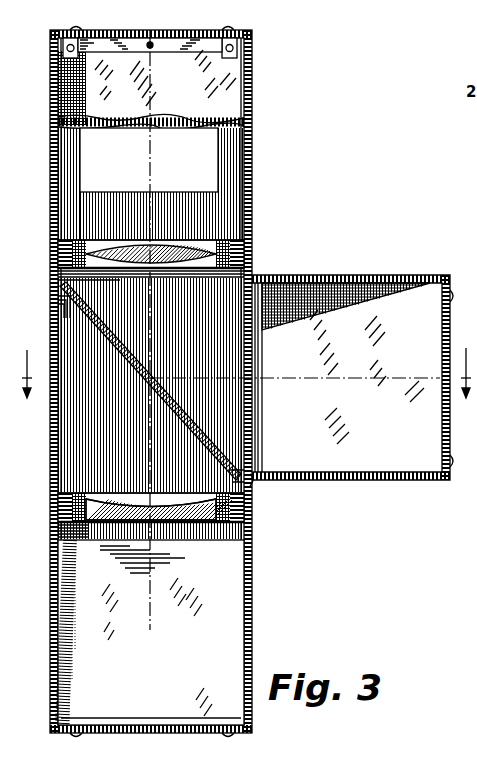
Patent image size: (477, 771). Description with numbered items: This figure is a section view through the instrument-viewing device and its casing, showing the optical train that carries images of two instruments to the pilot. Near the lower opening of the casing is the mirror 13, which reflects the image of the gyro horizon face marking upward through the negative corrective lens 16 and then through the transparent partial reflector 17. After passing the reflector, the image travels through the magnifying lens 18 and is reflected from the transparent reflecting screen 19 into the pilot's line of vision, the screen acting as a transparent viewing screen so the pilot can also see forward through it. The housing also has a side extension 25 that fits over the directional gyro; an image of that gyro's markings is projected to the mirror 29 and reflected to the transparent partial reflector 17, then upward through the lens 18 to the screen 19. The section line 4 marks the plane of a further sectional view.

The mirror 13 is at (215, 654).
The negative corrective lens 16 is at (190, 512).
The transparent partial reflector 17 is at (226, 466).
The magnifying lens 18 is at (205, 248).
The transparent reflecting screen 19 is at (183, 105).
The side extension 25 is at (410, 275).
The mirror 29 is at (388, 429).
The section line 4 is at (245, 364).